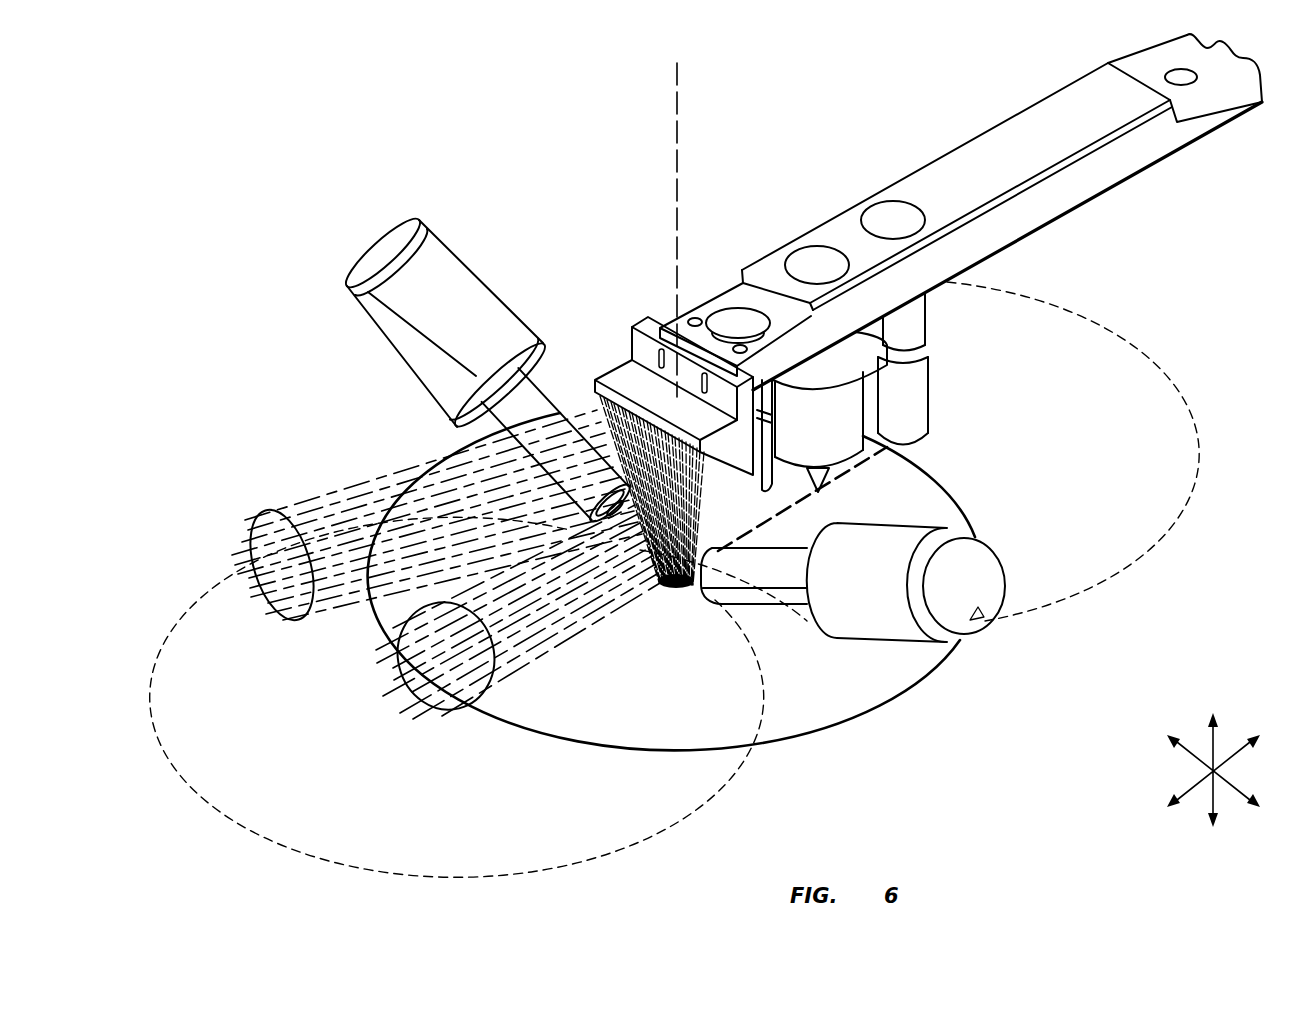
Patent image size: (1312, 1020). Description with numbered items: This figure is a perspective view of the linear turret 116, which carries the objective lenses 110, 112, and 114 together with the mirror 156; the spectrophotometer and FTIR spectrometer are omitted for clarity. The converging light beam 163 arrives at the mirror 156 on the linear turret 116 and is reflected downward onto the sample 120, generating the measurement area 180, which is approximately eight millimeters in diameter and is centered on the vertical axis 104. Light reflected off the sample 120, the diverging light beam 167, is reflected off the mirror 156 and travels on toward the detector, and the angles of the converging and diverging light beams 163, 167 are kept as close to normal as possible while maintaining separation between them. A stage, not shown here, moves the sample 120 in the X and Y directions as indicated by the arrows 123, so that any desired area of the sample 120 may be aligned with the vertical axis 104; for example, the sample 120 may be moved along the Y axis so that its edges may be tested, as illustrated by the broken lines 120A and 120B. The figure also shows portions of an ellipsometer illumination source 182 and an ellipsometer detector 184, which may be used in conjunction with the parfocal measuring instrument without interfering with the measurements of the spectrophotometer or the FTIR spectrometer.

The vertical axis 104 is at (677, 160).
The linear turret 116 is at (977, 150).
The mirror 156 is at (618, 379).
The ellipsometer detector 184 is at (375, 319).
The ellipsometer illumination source 182 is at (990, 574).
The objective lens 114 is at (924, 392).
The objective lens 112 is at (908, 465).
The objective lens 110 is at (788, 513).
The diverging light beam 167 is at (258, 525).
The converging light beam 163 is at (428, 701).
The measurement area 180 is at (665, 591).
The sample 120 is at (880, 709).
The broken line showing sample position 120A is at (1163, 533).
The broken line showing sample position 120B is at (670, 830).
The arrows 123 is at (1188, 722).